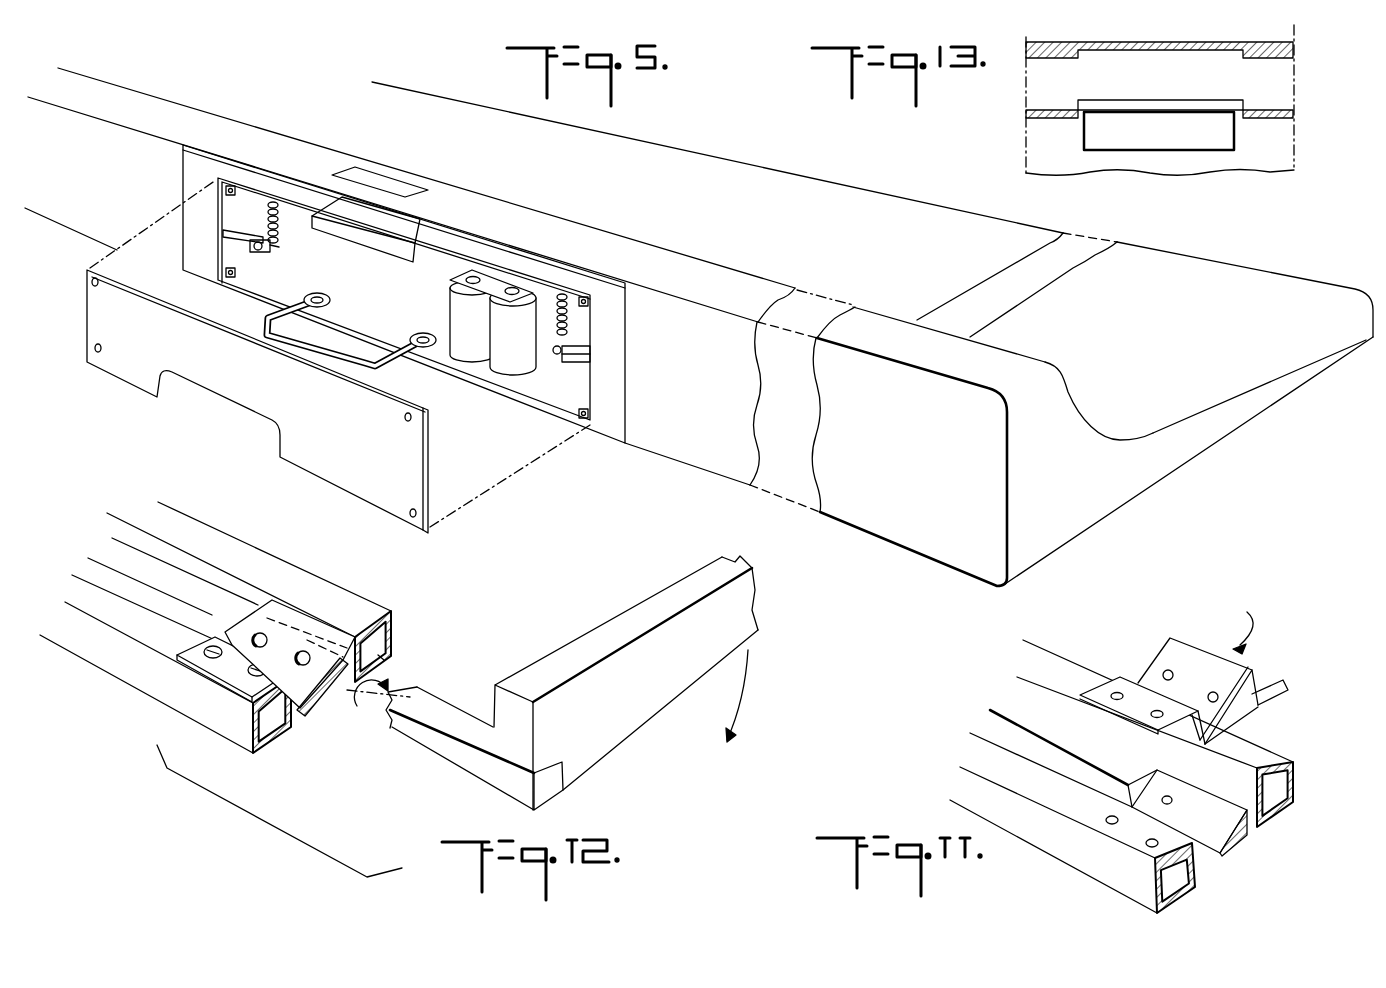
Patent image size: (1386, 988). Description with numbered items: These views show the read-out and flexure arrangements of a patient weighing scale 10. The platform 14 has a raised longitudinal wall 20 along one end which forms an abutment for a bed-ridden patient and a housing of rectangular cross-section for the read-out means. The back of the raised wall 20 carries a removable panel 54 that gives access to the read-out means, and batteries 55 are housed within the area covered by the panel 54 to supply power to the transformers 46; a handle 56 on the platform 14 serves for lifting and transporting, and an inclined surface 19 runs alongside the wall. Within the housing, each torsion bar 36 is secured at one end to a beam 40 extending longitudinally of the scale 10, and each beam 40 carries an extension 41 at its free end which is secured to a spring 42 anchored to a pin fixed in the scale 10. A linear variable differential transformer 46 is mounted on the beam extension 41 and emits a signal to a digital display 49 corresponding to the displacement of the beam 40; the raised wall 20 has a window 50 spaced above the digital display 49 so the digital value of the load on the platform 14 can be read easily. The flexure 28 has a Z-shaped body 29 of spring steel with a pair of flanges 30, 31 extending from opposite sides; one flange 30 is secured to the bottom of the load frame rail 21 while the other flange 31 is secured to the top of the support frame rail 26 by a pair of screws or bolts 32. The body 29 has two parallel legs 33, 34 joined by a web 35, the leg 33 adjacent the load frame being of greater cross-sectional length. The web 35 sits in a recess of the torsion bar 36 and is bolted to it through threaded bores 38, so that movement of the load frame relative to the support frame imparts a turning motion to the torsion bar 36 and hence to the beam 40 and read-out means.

In FIG. 5, the scale 10 is at (1330, 226).
In FIG. 5, the platform 14 is at (1313, 292).
In FIG. 5, the inclined surface 19 is at (1318, 360).
In FIG. 5, the raised longitudinal wall 20 is at (1022, 362).
In FIG. 13, the raised longitudinal wall 20 is at (1294, 46).
In FIG. 12, the load frame rail 21 is at (365, 603).
In FIG. 11, the load frame rail 21 is at (1267, 763).
In FIG. 12, the support frame rail 26 is at (225, 728).
In FIG. 11, the support frame rail 26 is at (1097, 863).
In FIG. 11, the flexure 28 is at (1247, 622).
In FIG. 11, the Z-shaped body 29 is at (1160, 655).
In FIG. 12, the flange 30 is at (380, 657).
In FIG. 11, the flange 30 is at (1275, 690).
In FIG. 12, the flange 31 is at (228, 663).
In FIG. 11, the flange 31 is at (1108, 678).
In FIG. 12, the screws or bolts 32 is at (187, 657).
In FIG. 11, the leg 33 is at (1257, 683).
In FIG. 11, the leg 34 is at (1212, 744).
In FIG. 12, the web 35 is at (282, 613).
In FIG. 11, the web 35 is at (1230, 717).
In FIG. 12, the torsion bar 36 is at (326, 702).
In FIG. 11, the torsion bar 36 is at (1237, 847).
In FIG. 12, the threaded bores 38 is at (281, 647).
In FIG. 11, the threaded bores 38 is at (1170, 804).
In FIG. 12, the beam 40 is at (587, 628).
In FIG. 5, the extension 41 is at (242, 250).
In FIG. 5, the spring 42 is at (282, 226).
In FIG. 5, the linear variable differential transformer 46 is at (240, 207).
In FIG. 5, the digital display 49 is at (372, 240).
In FIG. 13, the digital display 49 is at (1159, 140).
In FIG. 5, the window 50 is at (388, 183).
In FIG. 13, the window 50 is at (1171, 42).
In FIG. 5, the removable panel 54 is at (248, 393).
In FIG. 5, the batteries 55 is at (507, 353).
In FIG. 5, the handle 56 is at (323, 350).